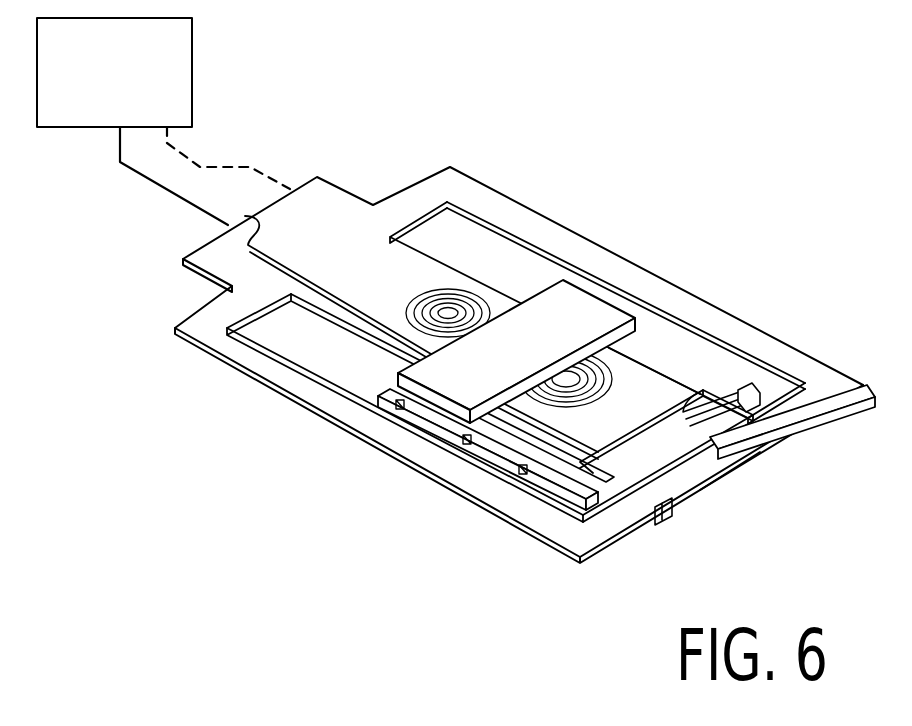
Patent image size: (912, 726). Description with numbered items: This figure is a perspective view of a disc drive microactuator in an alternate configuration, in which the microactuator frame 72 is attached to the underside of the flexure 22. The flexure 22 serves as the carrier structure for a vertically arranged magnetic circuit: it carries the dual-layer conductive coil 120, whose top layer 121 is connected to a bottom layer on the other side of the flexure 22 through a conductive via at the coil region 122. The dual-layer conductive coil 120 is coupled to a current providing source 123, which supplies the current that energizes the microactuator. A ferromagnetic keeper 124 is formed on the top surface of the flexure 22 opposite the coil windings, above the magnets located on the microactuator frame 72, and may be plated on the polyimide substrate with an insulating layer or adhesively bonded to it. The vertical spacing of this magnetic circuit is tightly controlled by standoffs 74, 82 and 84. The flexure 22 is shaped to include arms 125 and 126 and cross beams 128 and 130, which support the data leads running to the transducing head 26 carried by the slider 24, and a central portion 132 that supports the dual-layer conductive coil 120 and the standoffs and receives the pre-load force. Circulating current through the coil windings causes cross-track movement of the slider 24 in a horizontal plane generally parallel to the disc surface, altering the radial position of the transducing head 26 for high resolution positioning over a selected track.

The flexure 22 is at (657, 264).
The slider 24 is at (733, 470).
The transducing head 26 is at (667, 522).
The microactuator frame 72 is at (373, 397).
The standoff 74 is at (407, 410).
The standoff 82 is at (577, 493).
The standoff 84 is at (783, 403).
The dual-layer conductive coil 120 is at (530, 408).
The top layer 121 is at (403, 307).
The coil region 122 is at (437, 310).
The current providing source 123 is at (193, 32).
The ferromagnetic keeper 124 is at (563, 310).
The arm 125 is at (483, 480).
The arm 126 is at (774, 346).
The cross beam 128 is at (667, 487).
The cross beam 130 is at (773, 427).
The central portion 132 is at (673, 353).